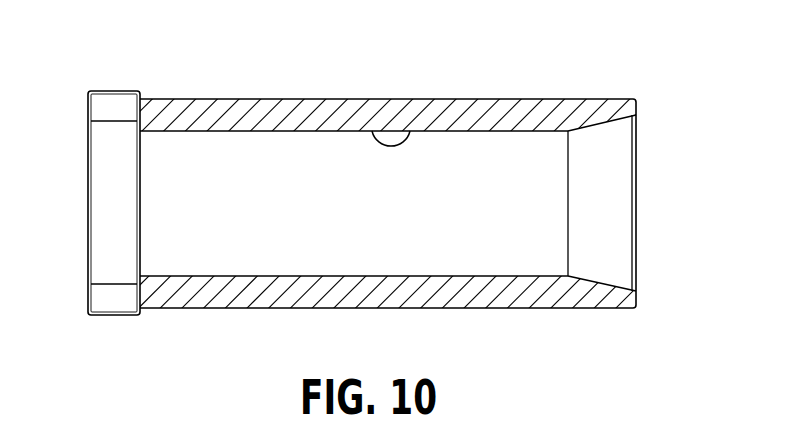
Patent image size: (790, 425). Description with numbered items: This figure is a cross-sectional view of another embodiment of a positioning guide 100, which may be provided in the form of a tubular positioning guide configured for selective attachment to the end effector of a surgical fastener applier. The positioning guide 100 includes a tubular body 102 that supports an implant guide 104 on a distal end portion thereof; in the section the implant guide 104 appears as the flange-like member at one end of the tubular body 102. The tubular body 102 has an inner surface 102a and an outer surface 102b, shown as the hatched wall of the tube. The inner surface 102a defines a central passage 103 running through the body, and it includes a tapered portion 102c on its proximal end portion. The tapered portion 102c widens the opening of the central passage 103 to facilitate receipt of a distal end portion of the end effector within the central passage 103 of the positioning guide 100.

The positioning guide 100 is at (312, 99).
The tubular body 102 is at (175, 112).
The inner surface 102a is at (410, 131).
The outer surface 102b is at (517, 308).
The tapered portion 102c is at (600, 118).
The central passage 103 is at (549, 227).
The implant guide 104 is at (88, 200).